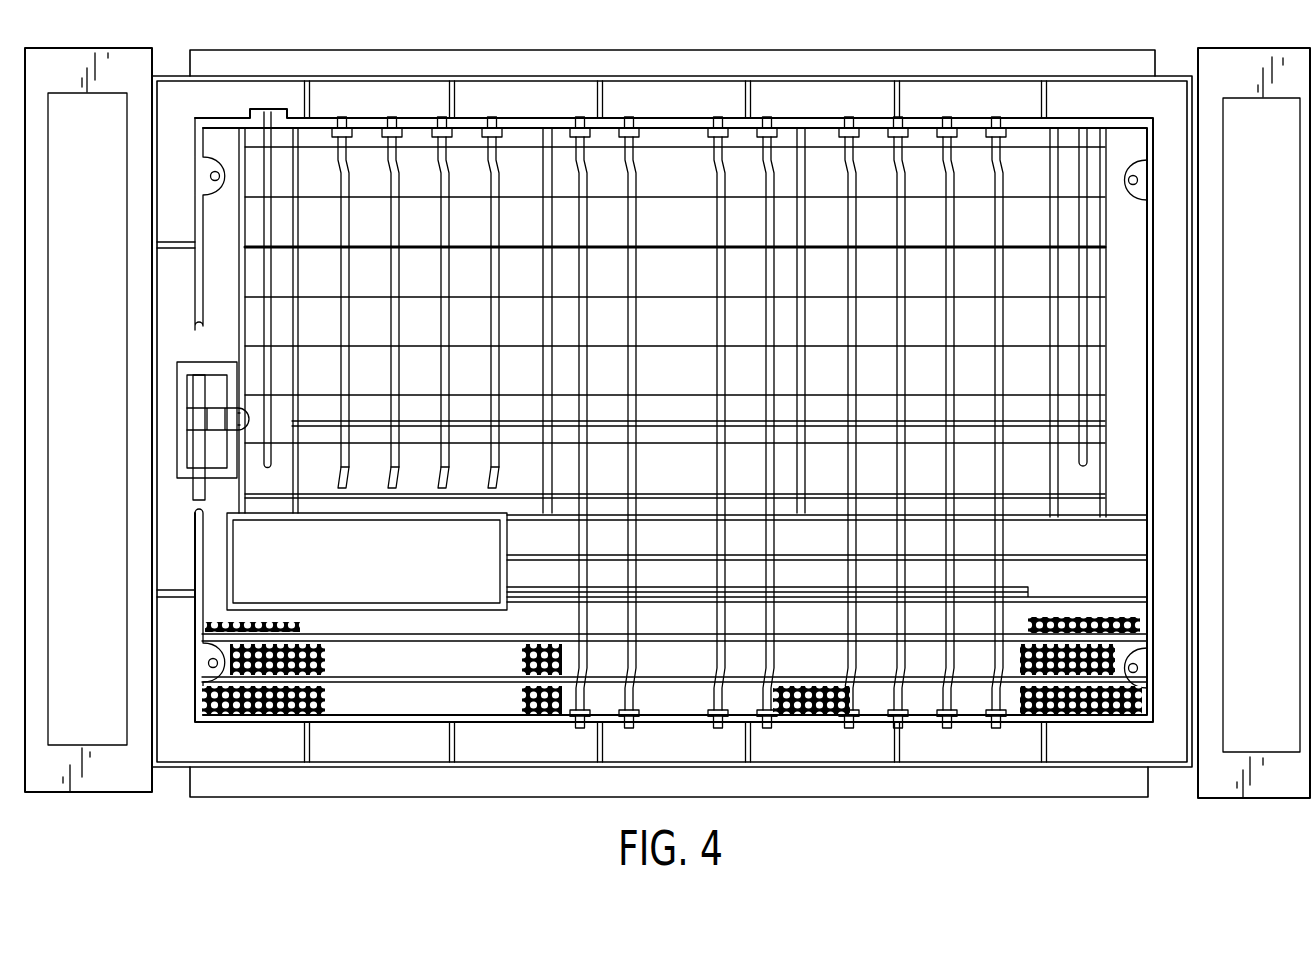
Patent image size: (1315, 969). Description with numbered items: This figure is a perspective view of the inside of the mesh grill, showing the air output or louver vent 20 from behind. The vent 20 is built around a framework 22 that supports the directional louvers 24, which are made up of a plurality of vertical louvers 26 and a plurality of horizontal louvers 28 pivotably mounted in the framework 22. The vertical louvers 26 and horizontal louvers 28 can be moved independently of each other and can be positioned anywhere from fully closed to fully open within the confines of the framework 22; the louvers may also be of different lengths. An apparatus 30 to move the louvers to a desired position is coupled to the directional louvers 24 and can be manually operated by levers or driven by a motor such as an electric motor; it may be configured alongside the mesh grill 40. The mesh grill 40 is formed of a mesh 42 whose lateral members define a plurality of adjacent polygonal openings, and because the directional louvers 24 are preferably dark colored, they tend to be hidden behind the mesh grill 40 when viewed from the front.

The air output vent 20 is at (455, 36).
The framework 22 is at (518, 80).
The directional louvers 24 is at (920, 126).
The vertical louvers 26 is at (352, 166).
The horizontal louvers 28 is at (468, 160).
The apparatus to move the louvers 30 is at (193, 418).
The mesh grill 40 is at (245, 640).
The mesh 42 is at (198, 698).